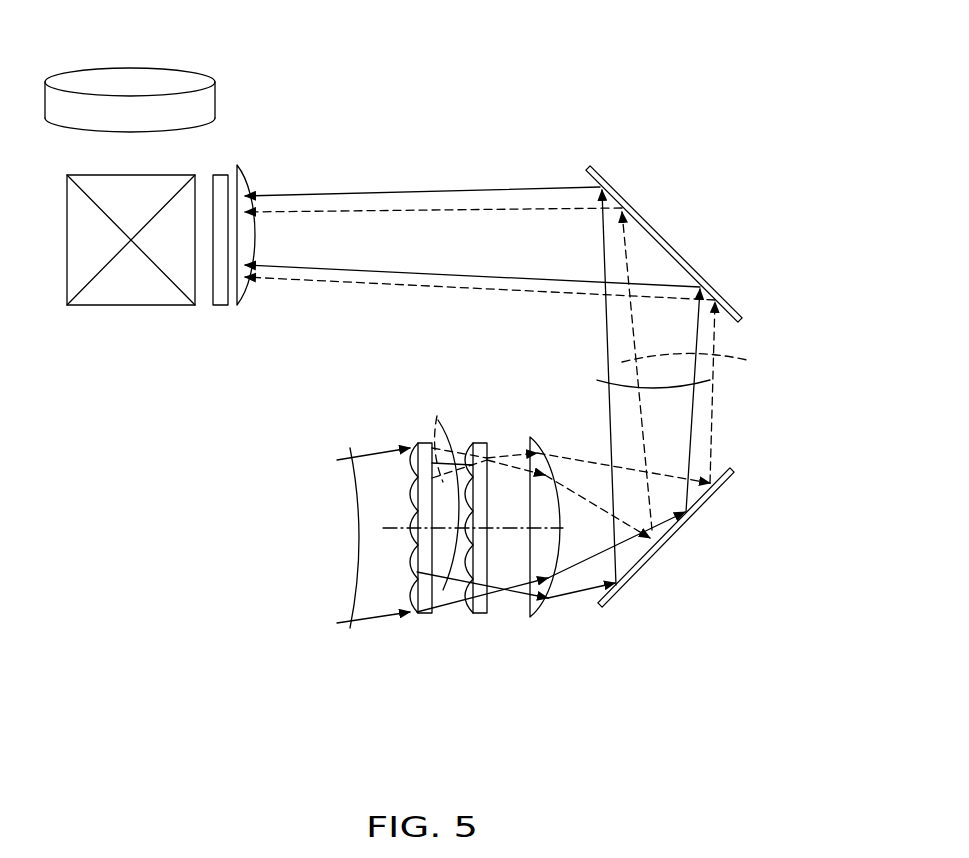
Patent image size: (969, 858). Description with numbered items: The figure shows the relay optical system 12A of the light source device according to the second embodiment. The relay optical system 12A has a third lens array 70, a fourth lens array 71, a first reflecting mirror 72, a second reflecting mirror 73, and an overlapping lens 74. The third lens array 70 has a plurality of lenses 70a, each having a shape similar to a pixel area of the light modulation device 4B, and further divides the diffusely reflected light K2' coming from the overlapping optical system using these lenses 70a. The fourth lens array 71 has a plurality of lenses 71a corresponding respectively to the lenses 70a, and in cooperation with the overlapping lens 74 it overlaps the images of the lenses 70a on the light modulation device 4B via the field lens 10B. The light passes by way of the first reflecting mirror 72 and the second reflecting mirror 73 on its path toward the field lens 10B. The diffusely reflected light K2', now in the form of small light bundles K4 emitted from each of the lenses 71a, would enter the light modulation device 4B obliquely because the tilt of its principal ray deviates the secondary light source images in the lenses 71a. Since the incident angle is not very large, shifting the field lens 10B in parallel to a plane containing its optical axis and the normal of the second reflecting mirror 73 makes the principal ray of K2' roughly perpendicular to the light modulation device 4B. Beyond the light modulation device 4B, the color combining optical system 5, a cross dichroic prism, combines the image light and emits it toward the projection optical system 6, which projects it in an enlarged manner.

The projection optical system 6 is at (112, 80).
The color combining optical system 5 is at (152, 182).
The light modulation device 4B is at (221, 175).
The field lens 10B is at (245, 175).
The second reflecting mirror 73 is at (607, 185).
The first reflecting mirror 72 is at (725, 478).
The overlapping lens 74 is at (545, 617).
The third lens array 70 is at (399, 575).
The lenses 70a is at (407, 596).
The fourth lens array 71 is at (460, 577).
The lenses 71a is at (465, 598).
The small light bundle K4 is at (712, 382).
The diffusely reflected light K2' is at (366, 505).
The relay optical system 12A is at (722, 76).